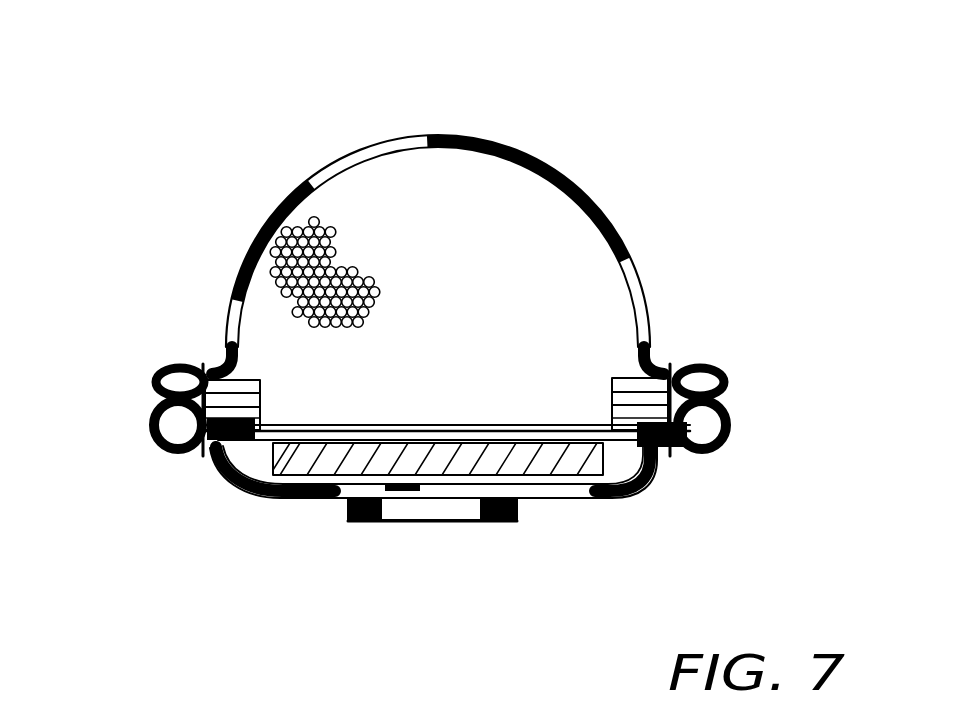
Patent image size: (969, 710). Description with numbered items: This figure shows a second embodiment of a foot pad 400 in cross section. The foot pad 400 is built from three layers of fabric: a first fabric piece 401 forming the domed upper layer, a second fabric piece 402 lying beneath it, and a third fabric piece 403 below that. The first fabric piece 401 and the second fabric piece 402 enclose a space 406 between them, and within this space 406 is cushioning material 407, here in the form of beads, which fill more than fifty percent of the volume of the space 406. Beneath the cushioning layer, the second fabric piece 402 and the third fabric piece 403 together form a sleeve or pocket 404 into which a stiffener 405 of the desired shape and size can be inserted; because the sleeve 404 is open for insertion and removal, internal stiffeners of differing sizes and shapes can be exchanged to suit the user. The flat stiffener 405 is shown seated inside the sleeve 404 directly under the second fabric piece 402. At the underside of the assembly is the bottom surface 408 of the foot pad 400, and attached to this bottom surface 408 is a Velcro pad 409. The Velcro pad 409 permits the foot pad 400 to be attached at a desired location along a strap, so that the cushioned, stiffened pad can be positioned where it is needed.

The foot pad 400 is at (228, 262).
The first fabric piece 401 is at (577, 185).
The second fabric piece 402 is at (610, 424).
The third fabric piece 403 is at (700, 462).
The sleeve 404 is at (225, 455).
The stiffener 405 is at (358, 462).
The space 406 is at (435, 200).
The cushioning material 407 is at (340, 250).
The bottom surface 408 is at (541, 500).
The Velcro pad 409 is at (478, 525).